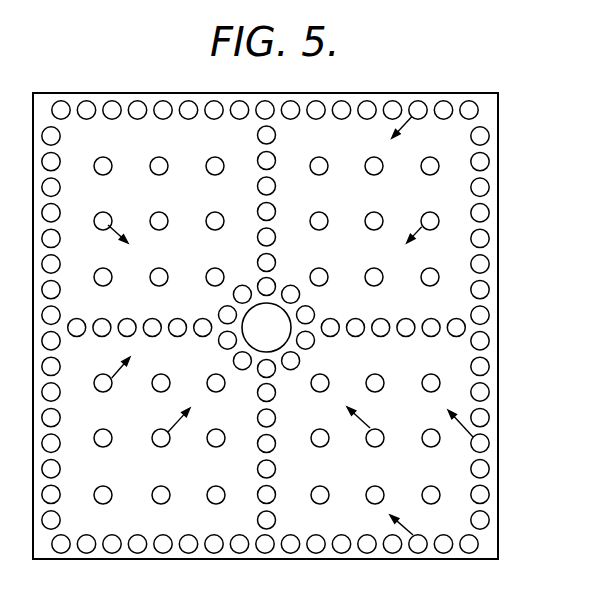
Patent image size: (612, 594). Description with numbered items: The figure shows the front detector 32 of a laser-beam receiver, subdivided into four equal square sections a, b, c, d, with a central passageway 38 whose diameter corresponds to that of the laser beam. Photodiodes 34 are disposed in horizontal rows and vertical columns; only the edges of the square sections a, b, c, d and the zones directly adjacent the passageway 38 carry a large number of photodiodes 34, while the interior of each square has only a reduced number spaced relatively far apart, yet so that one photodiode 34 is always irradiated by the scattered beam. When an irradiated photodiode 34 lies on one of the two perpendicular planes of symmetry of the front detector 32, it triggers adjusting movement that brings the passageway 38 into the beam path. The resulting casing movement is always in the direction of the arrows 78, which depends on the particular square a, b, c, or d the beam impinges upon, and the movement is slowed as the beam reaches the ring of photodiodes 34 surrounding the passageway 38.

The front detector 32 is at (498, 245).
The photodiodes 34 is at (153, 172).
The passageway 38 is at (282, 338).
The arrows 78 is at (422, 228).
The square section a is at (200, 204).
The square section b is at (142, 477).
The square section c is at (412, 417).
The square section d is at (357, 203).